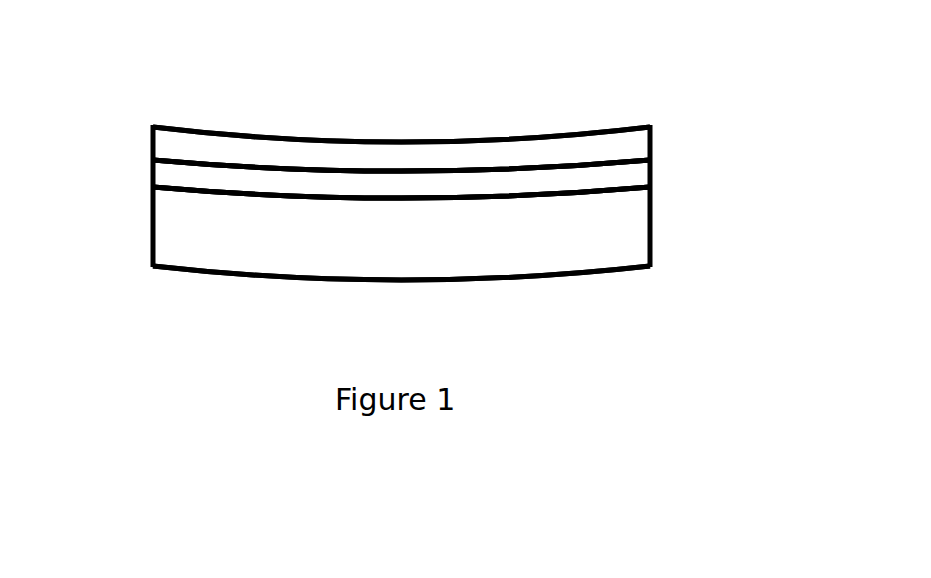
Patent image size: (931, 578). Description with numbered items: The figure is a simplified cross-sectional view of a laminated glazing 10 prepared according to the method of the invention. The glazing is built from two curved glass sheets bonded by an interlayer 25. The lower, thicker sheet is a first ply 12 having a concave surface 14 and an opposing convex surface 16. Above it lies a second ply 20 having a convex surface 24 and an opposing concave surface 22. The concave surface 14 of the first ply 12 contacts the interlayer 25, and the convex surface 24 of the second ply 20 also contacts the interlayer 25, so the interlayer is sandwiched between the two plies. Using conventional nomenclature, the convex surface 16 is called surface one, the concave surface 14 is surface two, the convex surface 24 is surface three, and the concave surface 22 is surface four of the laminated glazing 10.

The laminated glazing 10 is at (186, 48).
The first ply 12 is at (173, 230).
The concave surface 14 is at (617, 203).
The convex surface 16 is at (592, 282).
The second ply 20 is at (163, 143).
The concave surface 22 is at (568, 124).
The convex surface 24 is at (616, 149).
The interlayer 25 is at (173, 173).